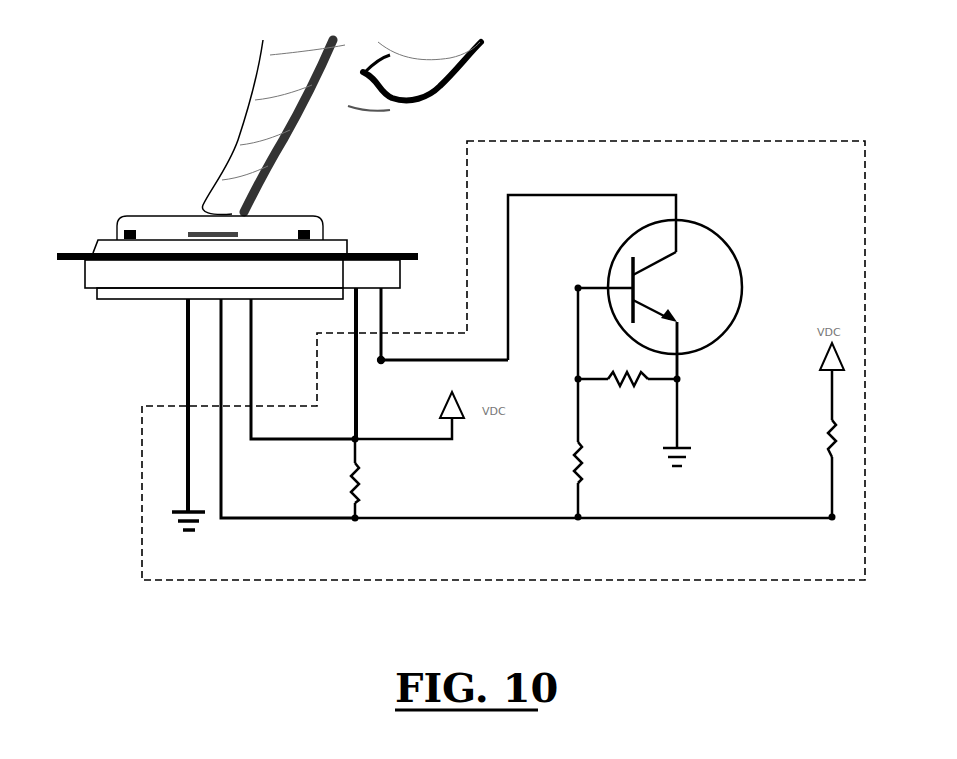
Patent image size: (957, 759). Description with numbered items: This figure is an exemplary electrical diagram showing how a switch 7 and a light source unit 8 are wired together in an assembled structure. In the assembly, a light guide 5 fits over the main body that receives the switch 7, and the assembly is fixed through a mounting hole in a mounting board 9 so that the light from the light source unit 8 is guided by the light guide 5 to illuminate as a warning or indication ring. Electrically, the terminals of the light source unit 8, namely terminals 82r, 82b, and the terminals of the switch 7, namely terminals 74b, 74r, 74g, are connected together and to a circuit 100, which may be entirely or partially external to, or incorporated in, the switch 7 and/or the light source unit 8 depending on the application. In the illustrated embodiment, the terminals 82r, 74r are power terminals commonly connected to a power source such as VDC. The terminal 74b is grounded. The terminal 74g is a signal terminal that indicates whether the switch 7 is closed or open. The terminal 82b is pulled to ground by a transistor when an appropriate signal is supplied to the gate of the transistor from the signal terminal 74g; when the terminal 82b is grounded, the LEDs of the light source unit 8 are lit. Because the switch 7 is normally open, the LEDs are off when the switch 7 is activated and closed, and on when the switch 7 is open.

The light guide 5 is at (346, 240).
The switch 7 is at (150, 212).
The light source unit 8 is at (79, 304).
The mounting board 9 is at (65, 246).
The terminal 74b is at (182, 372).
The terminal 74r is at (248, 378).
The signal terminal 74g is at (218, 433).
The terminal 82r is at (348, 312).
The terminal 82b is at (378, 313).
The circuit 100 is at (685, 140).